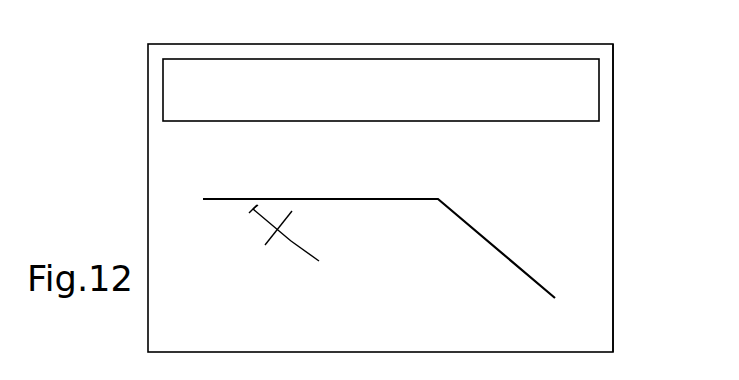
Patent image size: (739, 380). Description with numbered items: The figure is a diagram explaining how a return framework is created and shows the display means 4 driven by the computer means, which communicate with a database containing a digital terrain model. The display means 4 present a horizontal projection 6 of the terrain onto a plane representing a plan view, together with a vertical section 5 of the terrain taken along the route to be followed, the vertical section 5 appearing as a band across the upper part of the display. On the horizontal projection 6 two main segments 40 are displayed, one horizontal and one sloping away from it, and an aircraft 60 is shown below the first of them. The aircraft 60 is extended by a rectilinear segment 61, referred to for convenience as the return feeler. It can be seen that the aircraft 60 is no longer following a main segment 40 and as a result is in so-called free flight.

The display means 4 is at (148, 44).
The vertical section 5 is at (381, 90).
The horizontal projection 6 is at (614, 167).
The main segment 40 is at (364, 199).
The aircraft 60 is at (265, 243).
The rectilinear segment 61 is at (299, 246).